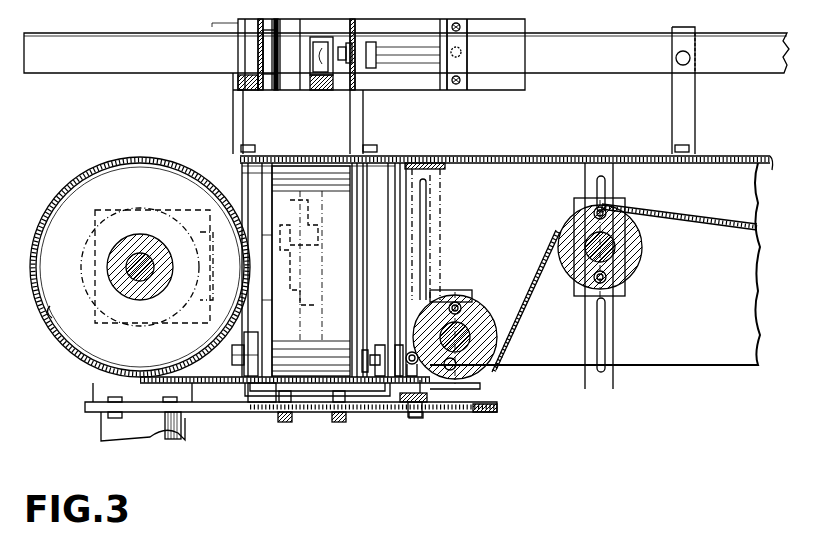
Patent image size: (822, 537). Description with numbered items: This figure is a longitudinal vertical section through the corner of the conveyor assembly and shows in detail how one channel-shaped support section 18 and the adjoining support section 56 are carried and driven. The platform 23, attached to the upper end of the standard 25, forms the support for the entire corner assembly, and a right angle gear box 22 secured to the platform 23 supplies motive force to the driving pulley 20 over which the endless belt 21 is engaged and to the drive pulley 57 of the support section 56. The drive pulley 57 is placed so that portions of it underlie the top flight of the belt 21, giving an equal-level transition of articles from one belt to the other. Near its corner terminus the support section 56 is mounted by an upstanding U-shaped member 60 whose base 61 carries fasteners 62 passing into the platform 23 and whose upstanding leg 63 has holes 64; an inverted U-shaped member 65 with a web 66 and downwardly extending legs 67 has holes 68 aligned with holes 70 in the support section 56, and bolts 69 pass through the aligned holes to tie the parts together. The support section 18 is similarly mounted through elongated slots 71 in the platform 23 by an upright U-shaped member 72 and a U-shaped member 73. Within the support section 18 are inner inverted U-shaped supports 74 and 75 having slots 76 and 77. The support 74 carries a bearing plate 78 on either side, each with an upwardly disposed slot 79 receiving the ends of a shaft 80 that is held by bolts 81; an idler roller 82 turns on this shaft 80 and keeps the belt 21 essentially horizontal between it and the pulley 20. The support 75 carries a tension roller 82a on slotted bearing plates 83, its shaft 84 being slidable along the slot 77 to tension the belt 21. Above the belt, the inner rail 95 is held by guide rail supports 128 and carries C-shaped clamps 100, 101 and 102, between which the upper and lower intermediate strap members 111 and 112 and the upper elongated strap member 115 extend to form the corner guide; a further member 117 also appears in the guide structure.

The support section 18 is at (650, 376).
The driving pulley 20 is at (60, 322).
The belt 21 is at (494, 155).
The right angle gear box 22 is at (180, 212).
The platform 23 is at (216, 414).
The standard 25 is at (102, 424).
The support section 56 is at (388, 167).
The drive pulley 57 is at (310, 167).
The U-shaped member 60 is at (386, 415).
The base 61 is at (350, 414).
The fasteners 62 is at (282, 420).
The upstanding leg 63 is at (373, 330).
The holes 64 is at (366, 346).
The inverted U-shaped member 65 is at (380, 256).
The web 66 is at (374, 168).
The downwardly extending legs 67 is at (388, 216).
The holes 68 is at (382, 344).
The bolts 69 is at (398, 350).
The holes 70 is at (234, 354).
The elongated slots 71 is at (430, 410).
The upright U-shaped member 72 is at (444, 398).
The U-shaped member 73 is at (432, 166).
The inner inverted U-shaped support 74 is at (462, 196).
The inner inverted U-shaped support 75 is at (612, 182).
The slot 76 is at (458, 231).
The slot 77 is at (600, 322).
The bearing plate 78 is at (468, 292).
The slot 79 is at (486, 377).
The shaft 80 is at (488, 359).
The bolts 81 is at (490, 392).
The idler roller 82 is at (484, 338).
The tension roller 82a is at (628, 260).
The slotted bearing plates 83 is at (580, 294).
The shaft 84 is at (614, 241).
The inner rail 95 is at (736, 70).
The C-shaped clamp 100 is at (474, 23).
The C-shaped clamp 101 is at (311, 60).
The C-shaped clamp 102 is at (238, 23).
The upper intermediate strap member 111 is at (384, 28).
The lower intermediate strap member 112 is at (384, 78).
The upper elongated strap member 115 is at (305, 30).
The side plate 117 is at (264, 55).
The guide rail supports 128 is at (230, 110).